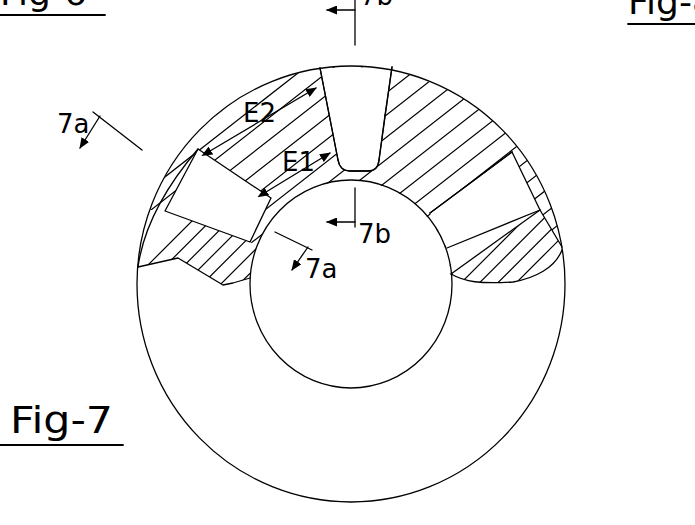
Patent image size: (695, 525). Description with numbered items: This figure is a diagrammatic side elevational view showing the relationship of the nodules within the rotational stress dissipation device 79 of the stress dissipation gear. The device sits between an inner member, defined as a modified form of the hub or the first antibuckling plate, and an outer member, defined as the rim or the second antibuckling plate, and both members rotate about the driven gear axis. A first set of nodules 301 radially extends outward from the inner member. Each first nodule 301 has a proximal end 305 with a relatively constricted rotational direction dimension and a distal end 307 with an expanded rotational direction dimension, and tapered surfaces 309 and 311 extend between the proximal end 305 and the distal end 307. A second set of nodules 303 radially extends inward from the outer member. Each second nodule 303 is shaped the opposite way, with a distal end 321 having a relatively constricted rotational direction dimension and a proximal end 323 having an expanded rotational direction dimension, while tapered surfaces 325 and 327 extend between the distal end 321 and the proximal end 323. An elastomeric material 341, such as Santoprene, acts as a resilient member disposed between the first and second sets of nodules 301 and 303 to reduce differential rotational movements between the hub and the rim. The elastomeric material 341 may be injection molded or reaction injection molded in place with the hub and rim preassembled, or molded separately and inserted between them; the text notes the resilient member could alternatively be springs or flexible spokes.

The rotational stress dissipation device 79 is at (463, 120).
The first set of nodules 301 is at (492, 201).
The second set of nodules 303 is at (358, 112).
The proximal end 305 is at (455, 222).
The distal end 307 is at (527, 203).
The tapered surface 309 is at (480, 173).
The tapered surface 311 is at (500, 223).
The distal end 321 is at (362, 148).
The proximal end 323 is at (385, 78).
The tapered surface 325 is at (326, 132).
The tapered surface 327 is at (386, 132).
The elastomeric material 341 is at (198, 240).